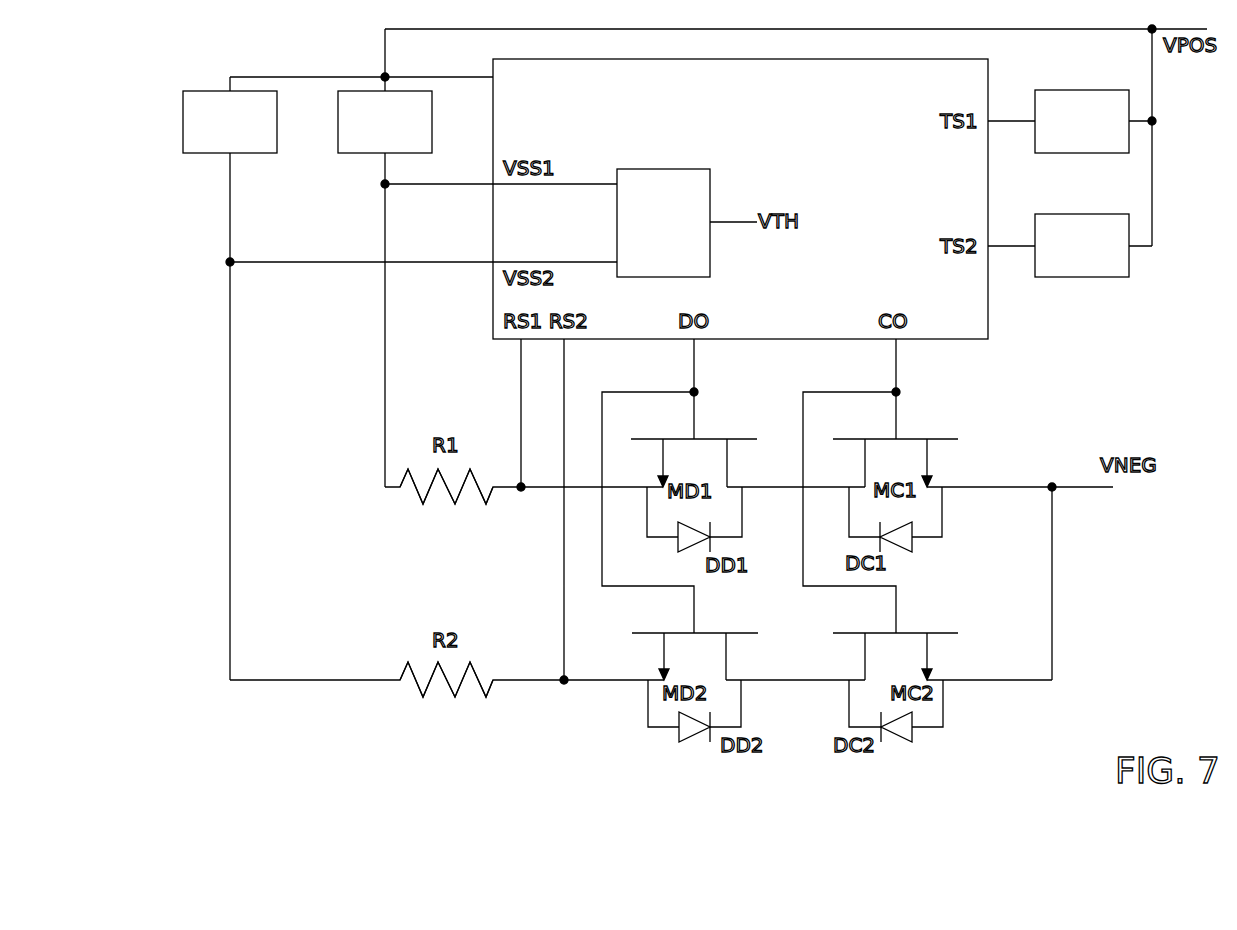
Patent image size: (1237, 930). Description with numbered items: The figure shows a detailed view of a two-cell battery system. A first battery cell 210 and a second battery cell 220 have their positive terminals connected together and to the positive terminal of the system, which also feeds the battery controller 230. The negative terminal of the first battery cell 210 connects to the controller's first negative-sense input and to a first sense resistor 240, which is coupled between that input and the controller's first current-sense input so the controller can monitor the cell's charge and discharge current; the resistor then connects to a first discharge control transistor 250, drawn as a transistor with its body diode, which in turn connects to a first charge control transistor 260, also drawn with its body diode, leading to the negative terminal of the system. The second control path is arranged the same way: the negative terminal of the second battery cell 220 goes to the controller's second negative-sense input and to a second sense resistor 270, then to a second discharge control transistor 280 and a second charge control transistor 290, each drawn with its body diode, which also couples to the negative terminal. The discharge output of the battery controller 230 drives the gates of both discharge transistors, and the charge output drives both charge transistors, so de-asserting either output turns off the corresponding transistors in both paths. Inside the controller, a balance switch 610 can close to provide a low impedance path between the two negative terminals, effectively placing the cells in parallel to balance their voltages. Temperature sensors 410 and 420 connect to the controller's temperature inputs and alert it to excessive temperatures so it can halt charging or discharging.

The first battery cell 210 is at (360, 153).
The second battery cell 220 is at (247, 153).
The battery controller 230 is at (988, 314).
The first sense resistor 240 is at (423, 504).
The first discharge control transistor 250 is at (717, 439).
The first charge control transistor 260 is at (913, 439).
The second sense resistor 270 is at (423, 697).
The second discharge control transistor 280 is at (718, 633).
The second charge control transistor 290 is at (918, 633).
The first temperature sensor 410 is at (1073, 90).
The second temperature sensor 420 is at (1107, 277).
The balance switch 610 is at (657, 169).